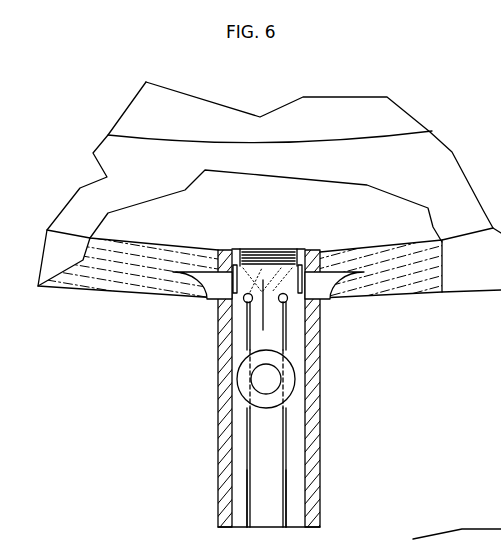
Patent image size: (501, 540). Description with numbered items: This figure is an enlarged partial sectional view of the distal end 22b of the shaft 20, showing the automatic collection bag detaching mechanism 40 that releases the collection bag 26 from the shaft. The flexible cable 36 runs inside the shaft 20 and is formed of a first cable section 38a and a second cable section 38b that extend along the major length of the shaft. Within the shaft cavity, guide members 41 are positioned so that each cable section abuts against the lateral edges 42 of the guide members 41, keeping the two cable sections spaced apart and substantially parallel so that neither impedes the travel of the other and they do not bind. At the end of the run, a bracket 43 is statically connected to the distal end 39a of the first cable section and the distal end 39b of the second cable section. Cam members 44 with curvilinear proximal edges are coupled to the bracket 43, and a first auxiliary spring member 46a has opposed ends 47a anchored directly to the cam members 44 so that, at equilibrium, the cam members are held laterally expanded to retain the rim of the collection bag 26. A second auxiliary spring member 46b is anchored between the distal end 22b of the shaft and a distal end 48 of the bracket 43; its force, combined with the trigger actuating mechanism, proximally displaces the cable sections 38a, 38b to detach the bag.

The collection bag 26 is at (434, 117).
The shaft 20 is at (326, 382).
The distal end of the shaft 22b is at (320, 345).
The flexible cable 36 is at (303, 462).
The first cable section 38a is at (287, 502).
The second cable section 38b is at (247, 502).
The distal end of the first cable section 39a is at (285, 304).
The distal end of the second cable section 39b is at (245, 303).
The automatic collection bag detaching mechanism 40 is at (115, 363).
The guide members 41 is at (265, 416).
The lateral edges of the guide members 42 is at (247, 378).
The bracket 43 is at (267, 309).
The cam members 44 is at (188, 279).
The first auxiliary spring member 46a is at (250, 283).
The second auxiliary spring member 46b is at (266, 245).
The opposed ends of the first auxiliary spring member 47a is at (240, 262).
The distal end of the bracket 48 is at (297, 266).